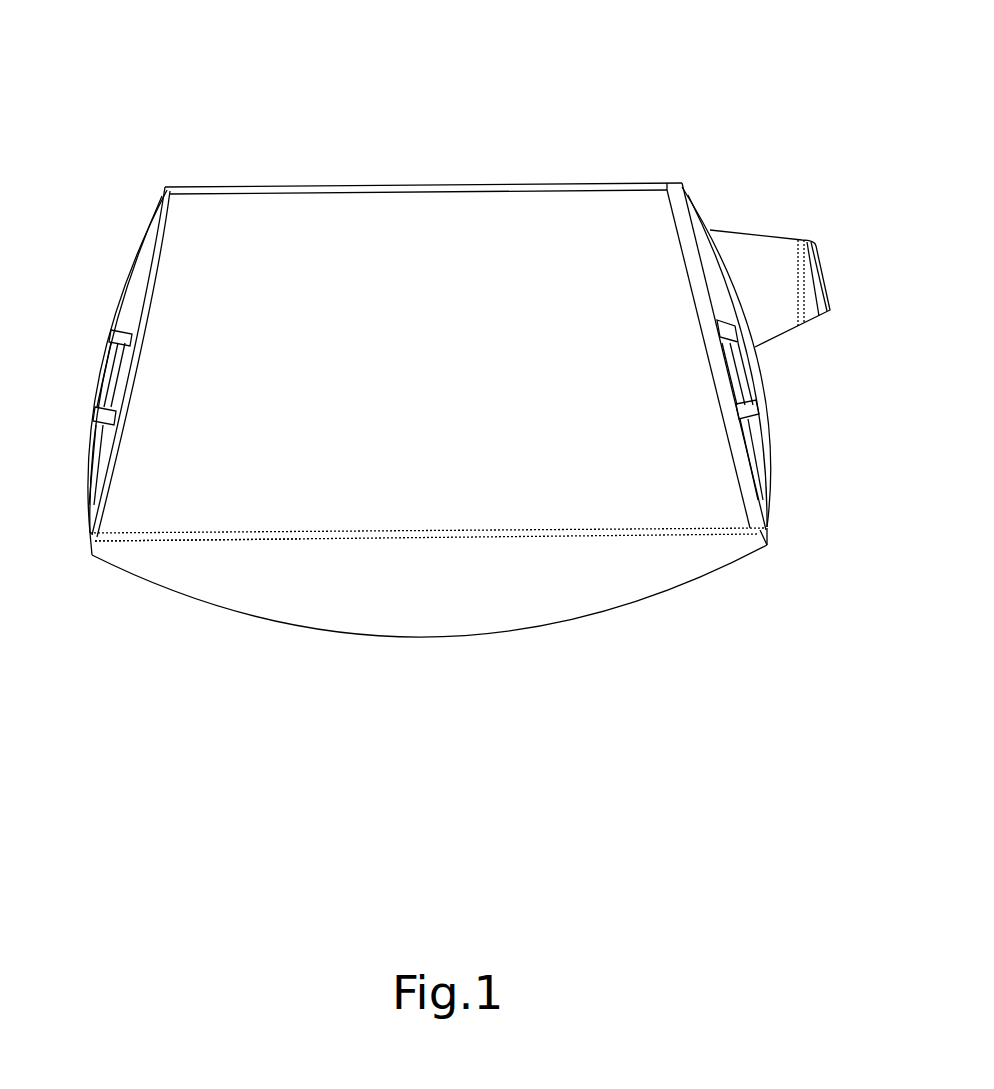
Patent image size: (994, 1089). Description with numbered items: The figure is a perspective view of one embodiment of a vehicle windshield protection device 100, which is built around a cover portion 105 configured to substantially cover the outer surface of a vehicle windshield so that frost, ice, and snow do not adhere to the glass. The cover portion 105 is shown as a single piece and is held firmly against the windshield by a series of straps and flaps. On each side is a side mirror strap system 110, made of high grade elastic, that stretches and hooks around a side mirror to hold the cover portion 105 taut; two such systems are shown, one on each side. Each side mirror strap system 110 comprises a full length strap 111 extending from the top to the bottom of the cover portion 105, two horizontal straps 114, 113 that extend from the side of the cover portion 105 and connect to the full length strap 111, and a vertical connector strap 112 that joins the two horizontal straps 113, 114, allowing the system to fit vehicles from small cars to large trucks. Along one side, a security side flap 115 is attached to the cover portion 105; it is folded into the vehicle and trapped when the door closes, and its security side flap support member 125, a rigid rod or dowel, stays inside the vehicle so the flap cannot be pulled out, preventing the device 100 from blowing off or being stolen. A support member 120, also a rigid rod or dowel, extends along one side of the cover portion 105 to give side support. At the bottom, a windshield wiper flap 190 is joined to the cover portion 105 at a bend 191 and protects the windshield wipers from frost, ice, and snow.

The vehicle windshield protection device 100 is at (586, 68).
The cover portion 105 is at (427, 335).
The side mirror strap system 110 is at (129, 172).
The full length strap 111 is at (112, 361).
The vertical connector strap 112 is at (397, 424).
The horizontal strap 113 is at (390, 460).
The horizontal strap 114 is at (385, 314).
The security side flap 115 is at (797, 276).
The support member 120 is at (803, 548).
The security side flap support member 125 is at (841, 291).
The windshield wiper flap 190 is at (429, 615).
The bend 191 is at (197, 597).